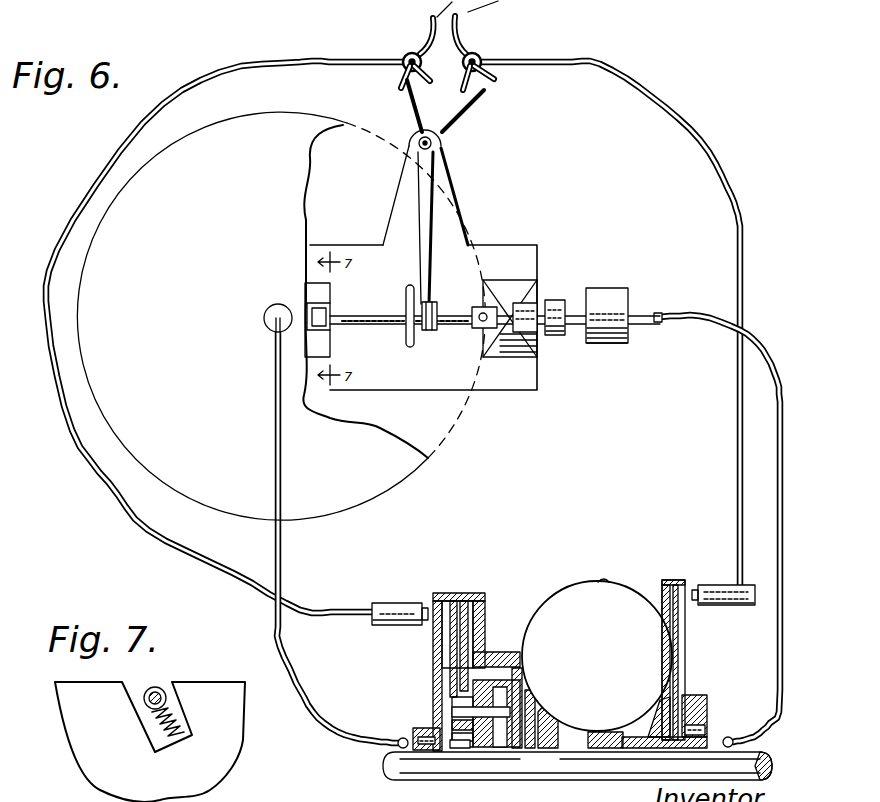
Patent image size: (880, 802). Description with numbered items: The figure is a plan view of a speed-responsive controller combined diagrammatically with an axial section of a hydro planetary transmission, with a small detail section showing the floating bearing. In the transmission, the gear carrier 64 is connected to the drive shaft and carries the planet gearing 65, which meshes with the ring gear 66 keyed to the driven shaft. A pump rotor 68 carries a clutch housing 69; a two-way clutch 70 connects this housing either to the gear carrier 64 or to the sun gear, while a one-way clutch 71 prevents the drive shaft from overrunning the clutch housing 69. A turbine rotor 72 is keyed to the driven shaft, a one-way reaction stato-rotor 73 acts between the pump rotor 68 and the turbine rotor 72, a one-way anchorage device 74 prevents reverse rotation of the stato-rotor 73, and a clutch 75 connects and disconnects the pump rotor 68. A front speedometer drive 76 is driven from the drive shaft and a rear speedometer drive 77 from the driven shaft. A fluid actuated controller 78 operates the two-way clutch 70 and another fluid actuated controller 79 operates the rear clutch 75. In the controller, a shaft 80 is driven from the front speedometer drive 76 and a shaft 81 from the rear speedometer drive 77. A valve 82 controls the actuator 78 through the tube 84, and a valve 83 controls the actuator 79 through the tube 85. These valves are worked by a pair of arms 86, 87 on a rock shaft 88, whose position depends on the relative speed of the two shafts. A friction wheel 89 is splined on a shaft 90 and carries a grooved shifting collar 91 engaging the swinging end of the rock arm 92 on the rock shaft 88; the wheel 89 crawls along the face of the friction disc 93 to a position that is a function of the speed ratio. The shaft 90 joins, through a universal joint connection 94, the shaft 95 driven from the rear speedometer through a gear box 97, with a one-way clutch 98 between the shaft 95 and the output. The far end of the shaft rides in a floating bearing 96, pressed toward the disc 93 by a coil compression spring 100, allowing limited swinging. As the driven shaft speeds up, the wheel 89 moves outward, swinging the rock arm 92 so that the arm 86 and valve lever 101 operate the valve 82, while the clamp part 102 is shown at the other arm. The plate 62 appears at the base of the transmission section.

In FIG. 6, the plate 62 is at (456, 751).
In FIG. 6, the gear carrier 64 is at (497, 751).
In FIG. 6, the planet gearing 65 is at (455, 704).
In FIG. 6, the ring gear 66 is at (487, 680).
In FIG. 6, the pump rotor 68 is at (575, 584).
In FIG. 6, the clutch housing 69 is at (470, 593).
In FIG. 6, the two-way clutch 70 is at (450, 593).
In FIG. 6, the one-way clutch 71 is at (422, 751).
In FIG. 6, the turbine rotor 72 is at (536, 633).
In FIG. 6, the one-way reaction stato-rotor 73 is at (584, 731).
In FIG. 6, the one-way anchorage device 74 is at (706, 726).
In FIG. 6, the clutch 75 is at (677, 583).
In FIG. 6, the speedometer drive 76 is at (335, 733).
In FIG. 6, the speedometer drive 77 is at (778, 624).
In FIG. 6, the fluid actuated controller 78 is at (396, 610).
In FIG. 6, the fluid actuated controller 79 is at (722, 606).
In FIG. 6, the shaft 80 is at (268, 323).
In FIG. 6, the shaft 81 is at (650, 313).
In FIG. 6, the valve 82 is at (409, 52).
In FIG. 6, the valve 83 is at (482, 56).
In FIG. 6, the tube 84 is at (63, 216).
In FIG. 6, the tube 85 is at (652, 98).
In FIG. 6, the arm 86 is at (410, 101).
In FIG. 6, the arm 87 is at (479, 101).
In FIG. 6, the rock shaft 88 is at (432, 143).
In FIG. 6, the friction wheel 89 is at (404, 299).
In FIG. 6, the shaft 90 is at (393, 329).
In FIG. 6, the grooved shifting collar 91 is at (434, 333).
In FIG. 6, the rock arm 92 is at (426, 219).
In FIG. 6, the friction disc 93 is at (286, 118).
In FIG. 6, the universal joint connection 94 is at (487, 311).
In FIG. 6, the shaft 95 is at (537, 332).
In FIG. 7, the floating bearing 96 is at (160, 689).
In FIG. 6, the gear box 97 is at (612, 301).
In FIG. 6, the one-way clutch 98 is at (565, 333).
In FIG. 7, the coil compression spring 100 is at (178, 726).
In FIG. 6, the valve lever 101 is at (399, 82).
In FIG. 6, the clamp arm 102 is at (468, 89).